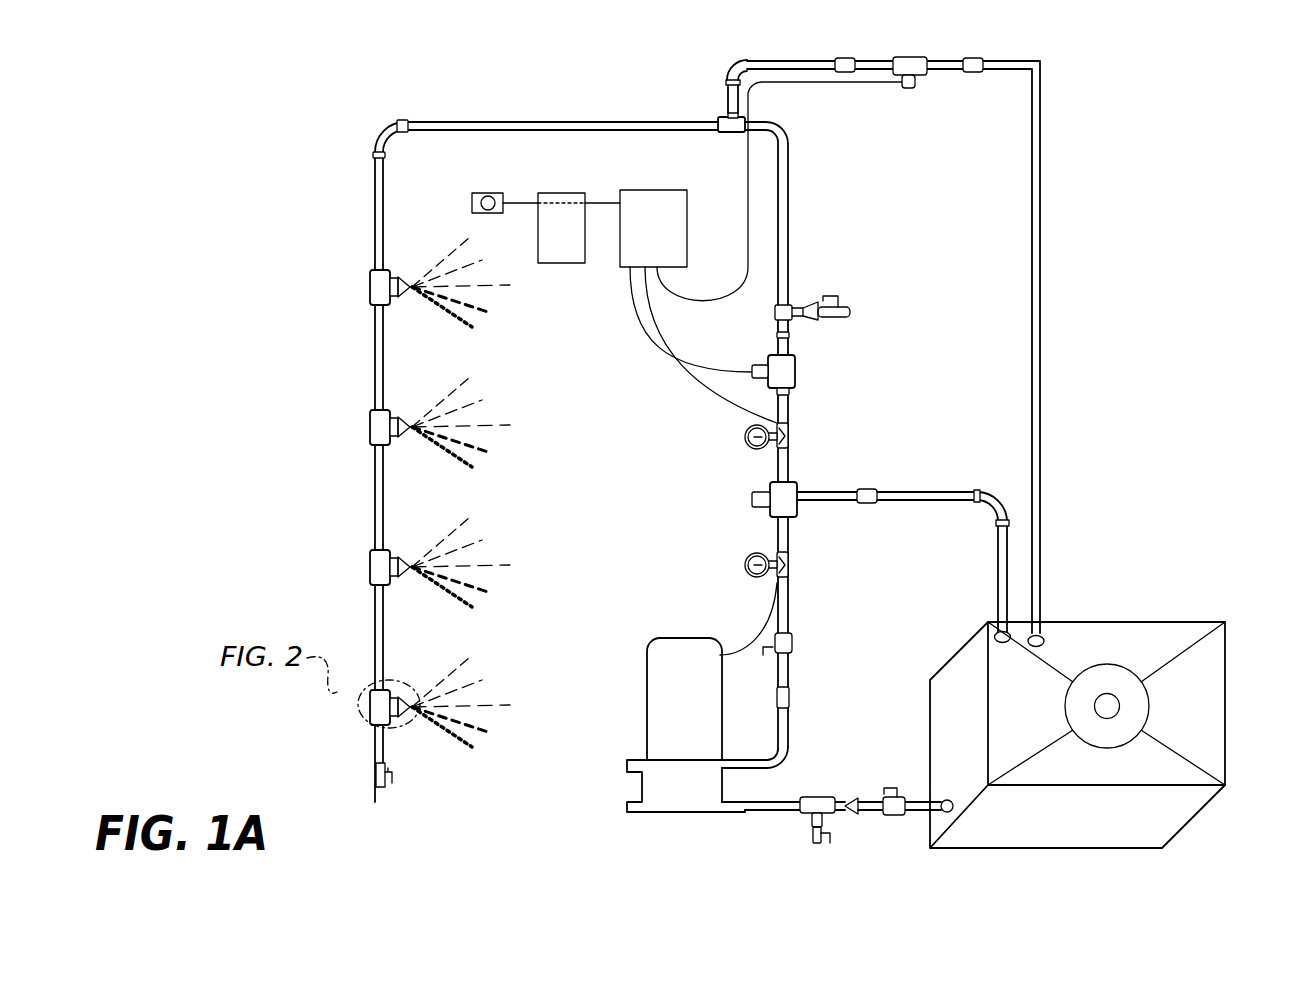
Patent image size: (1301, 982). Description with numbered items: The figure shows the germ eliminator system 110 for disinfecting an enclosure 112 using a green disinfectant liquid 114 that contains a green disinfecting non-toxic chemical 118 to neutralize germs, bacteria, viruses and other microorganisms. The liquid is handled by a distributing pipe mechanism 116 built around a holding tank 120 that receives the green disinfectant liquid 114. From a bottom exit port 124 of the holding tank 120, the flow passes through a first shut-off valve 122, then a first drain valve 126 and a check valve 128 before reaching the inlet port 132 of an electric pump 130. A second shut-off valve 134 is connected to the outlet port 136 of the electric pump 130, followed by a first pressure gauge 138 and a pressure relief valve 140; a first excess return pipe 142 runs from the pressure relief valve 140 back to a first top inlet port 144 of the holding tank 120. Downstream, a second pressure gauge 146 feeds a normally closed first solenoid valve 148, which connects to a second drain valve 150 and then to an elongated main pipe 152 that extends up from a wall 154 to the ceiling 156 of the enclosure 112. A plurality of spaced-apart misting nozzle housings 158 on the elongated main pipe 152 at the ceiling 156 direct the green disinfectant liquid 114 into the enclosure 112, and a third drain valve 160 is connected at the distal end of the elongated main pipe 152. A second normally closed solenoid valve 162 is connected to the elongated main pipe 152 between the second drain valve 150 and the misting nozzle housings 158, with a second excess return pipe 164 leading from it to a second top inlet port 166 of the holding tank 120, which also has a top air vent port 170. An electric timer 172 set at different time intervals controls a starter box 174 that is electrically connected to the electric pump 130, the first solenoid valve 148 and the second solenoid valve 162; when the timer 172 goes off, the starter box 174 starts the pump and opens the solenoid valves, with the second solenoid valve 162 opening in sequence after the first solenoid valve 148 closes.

The germ eliminator system 110 is at (1128, 279).
The enclosure 112 is at (607, 483).
The green disinfectant liquid 114 is at (448, 532).
The distributing pipe mechanism 116 is at (942, 347).
The green disinfecting non-toxic chemical 118 is at (448, 392).
The holding tank 120 is at (1113, 735).
The first shut-off valve 122 is at (895, 817).
The bottom exit port 124 is at (947, 799).
The first drain valve 126 is at (807, 817).
The check valve 128 is at (767, 803).
The electric pump 130 is at (662, 702).
The inlet port 132 is at (735, 812).
The second shut-off valve 134 is at (793, 640).
The outlet port 136 is at (735, 765).
The first pressure gauge 138 is at (743, 578).
The pressure relief valve 140 is at (787, 497).
The first excess return pipe 142 is at (922, 497).
The first top inlet port 144 is at (992, 630).
The second pressure gauge 146 is at (745, 446).
The first solenoid valve 148 is at (795, 372).
The second drain valve 150 is at (837, 314).
The elongated main pipe 152 is at (380, 233).
The wall 154 is at (395, 123).
The ceiling 156 is at (375, 795).
The misting nozzle housing 158 is at (395, 560).
The third drain valve 160 is at (395, 777).
The second solenoid valve 162 is at (917, 78).
The second excess return pipe 164 is at (1037, 190).
The second top inlet port 166 is at (1048, 633).
The top air vent port 170 is at (1117, 713).
The electric timer 172 is at (553, 192).
The starter box 174 is at (660, 190).